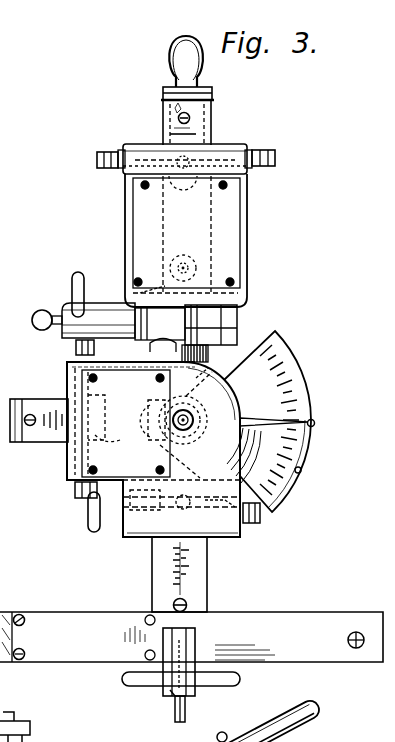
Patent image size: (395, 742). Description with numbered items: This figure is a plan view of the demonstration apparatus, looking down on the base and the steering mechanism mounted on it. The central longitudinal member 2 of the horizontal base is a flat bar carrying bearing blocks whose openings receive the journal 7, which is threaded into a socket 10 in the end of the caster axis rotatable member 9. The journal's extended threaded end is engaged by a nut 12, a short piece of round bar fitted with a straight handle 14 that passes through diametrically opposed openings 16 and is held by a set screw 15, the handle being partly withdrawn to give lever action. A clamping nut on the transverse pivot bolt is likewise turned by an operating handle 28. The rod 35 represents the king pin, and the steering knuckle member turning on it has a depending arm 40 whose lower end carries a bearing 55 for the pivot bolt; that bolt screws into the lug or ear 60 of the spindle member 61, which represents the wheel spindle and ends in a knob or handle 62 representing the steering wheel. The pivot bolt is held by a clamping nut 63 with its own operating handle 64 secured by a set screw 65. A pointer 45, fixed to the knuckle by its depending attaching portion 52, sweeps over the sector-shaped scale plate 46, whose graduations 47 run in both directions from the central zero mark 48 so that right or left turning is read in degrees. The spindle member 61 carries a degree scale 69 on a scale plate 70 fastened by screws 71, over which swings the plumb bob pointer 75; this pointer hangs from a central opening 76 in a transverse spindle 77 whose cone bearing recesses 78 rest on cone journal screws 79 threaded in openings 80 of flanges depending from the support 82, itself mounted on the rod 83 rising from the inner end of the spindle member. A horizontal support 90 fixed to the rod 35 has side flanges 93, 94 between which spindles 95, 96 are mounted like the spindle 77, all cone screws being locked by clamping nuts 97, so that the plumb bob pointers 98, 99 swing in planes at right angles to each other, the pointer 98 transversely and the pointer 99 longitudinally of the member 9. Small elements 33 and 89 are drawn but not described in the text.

The central longitudinal member 2 is at (215, 372).
The journal 7 is at (55, 612).
The caster axis rotatable member 9 is at (198, 375).
The socket 10 is at (200, 640).
The nut 12 is at (196, 690).
The handle 14 is at (238, 680).
The set screw 15 is at (186, 702).
The diametrically opposed openings 16 is at (172, 694).
The operating handle 28 is at (88, 520).
The side bracket 33 is at (39, 420).
The rod 35 is at (196, 434).
The depending arm 40 is at (148, 362).
The pointer 45 is at (300, 420).
The sector-shaped scale plate 46 is at (288, 345).
The graduations 47 is at (280, 371).
The central zero mark 48 is at (315, 421).
The depending attaching portion 52 is at (165, 461).
The bearing 55 is at (152, 283).
The lug or ear 60 is at (238, 324).
The spindle member 61 is at (163, 89).
The knob or handle 62 is at (171, 53).
The clamping nut 63 is at (62, 307).
The operating handle 64 is at (72, 280).
The set screw 65 is at (40, 329).
The degree scale 69 is at (191, 116).
The scale plate 70 is at (163, 116).
The screws 71 is at (204, 112).
The plumb bob pointer 75 is at (187, 184).
The central opening 76 is at (242, 736).
The transverse spindle 77 is at (206, 146).
The cone bearing recesses 78 is at (136, 148).
The cone journal screws 79 is at (105, 165).
The threaded openings 80 is at (124, 146).
The support 82 is at (247, 252).
The rod 83 is at (184, 262).
The cover plate 89 is at (240, 222).
The horizontal support 90 is at (206, 354).
The side flange 93 is at (118, 358).
The side flange 94 is at (130, 503).
The spindle 95 is at (111, 439).
The spindle 96 is at (212, 512).
The clamping nuts 97 is at (84, 340).
The plumb bob pointer 98 is at (100, 420).
The plumb bob pointer 99 is at (183, 497).